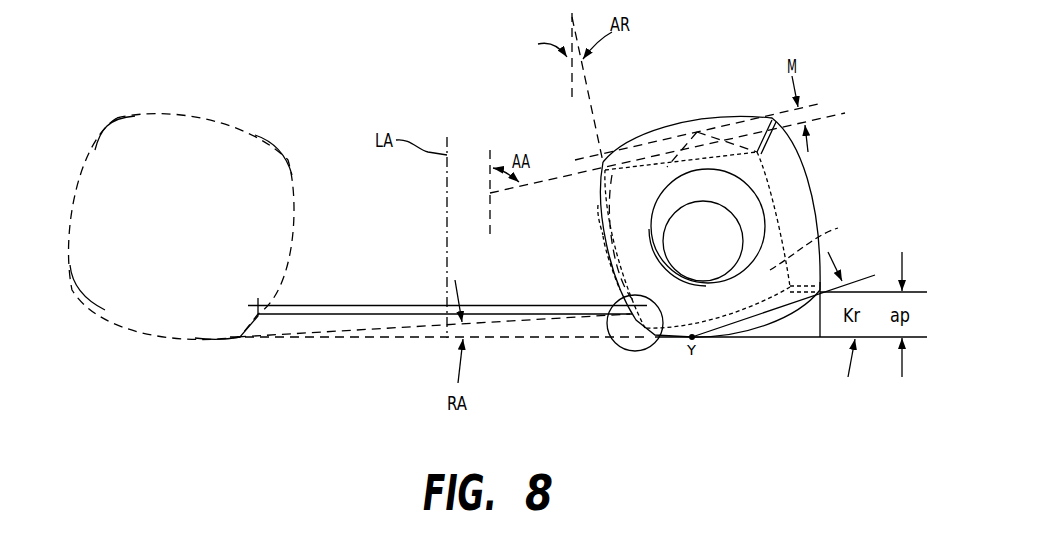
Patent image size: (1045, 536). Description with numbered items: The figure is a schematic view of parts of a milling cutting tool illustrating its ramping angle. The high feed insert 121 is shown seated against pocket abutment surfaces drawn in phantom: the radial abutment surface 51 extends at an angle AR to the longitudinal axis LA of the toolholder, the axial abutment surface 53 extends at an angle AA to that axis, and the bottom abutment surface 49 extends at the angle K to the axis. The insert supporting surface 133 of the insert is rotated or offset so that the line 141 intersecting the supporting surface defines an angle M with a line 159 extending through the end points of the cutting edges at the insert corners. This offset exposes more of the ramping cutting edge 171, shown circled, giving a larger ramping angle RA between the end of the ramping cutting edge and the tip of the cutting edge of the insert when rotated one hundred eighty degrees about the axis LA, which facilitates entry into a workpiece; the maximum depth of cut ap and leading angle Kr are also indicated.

The high feed insert 121 is at (219, 120).
The axial abutment surface 53 is at (697, 157).
The radial abutment surface 51 is at (598, 210).
The insert supporting surface 133 is at (602, 236).
The bottom abutment surface 49 is at (816, 250).
The line through cutting edge end points 159 is at (813, 102).
The line intersecting insert supporting surface 141 is at (840, 113).
The ramping cutting edge 171 is at (622, 350).